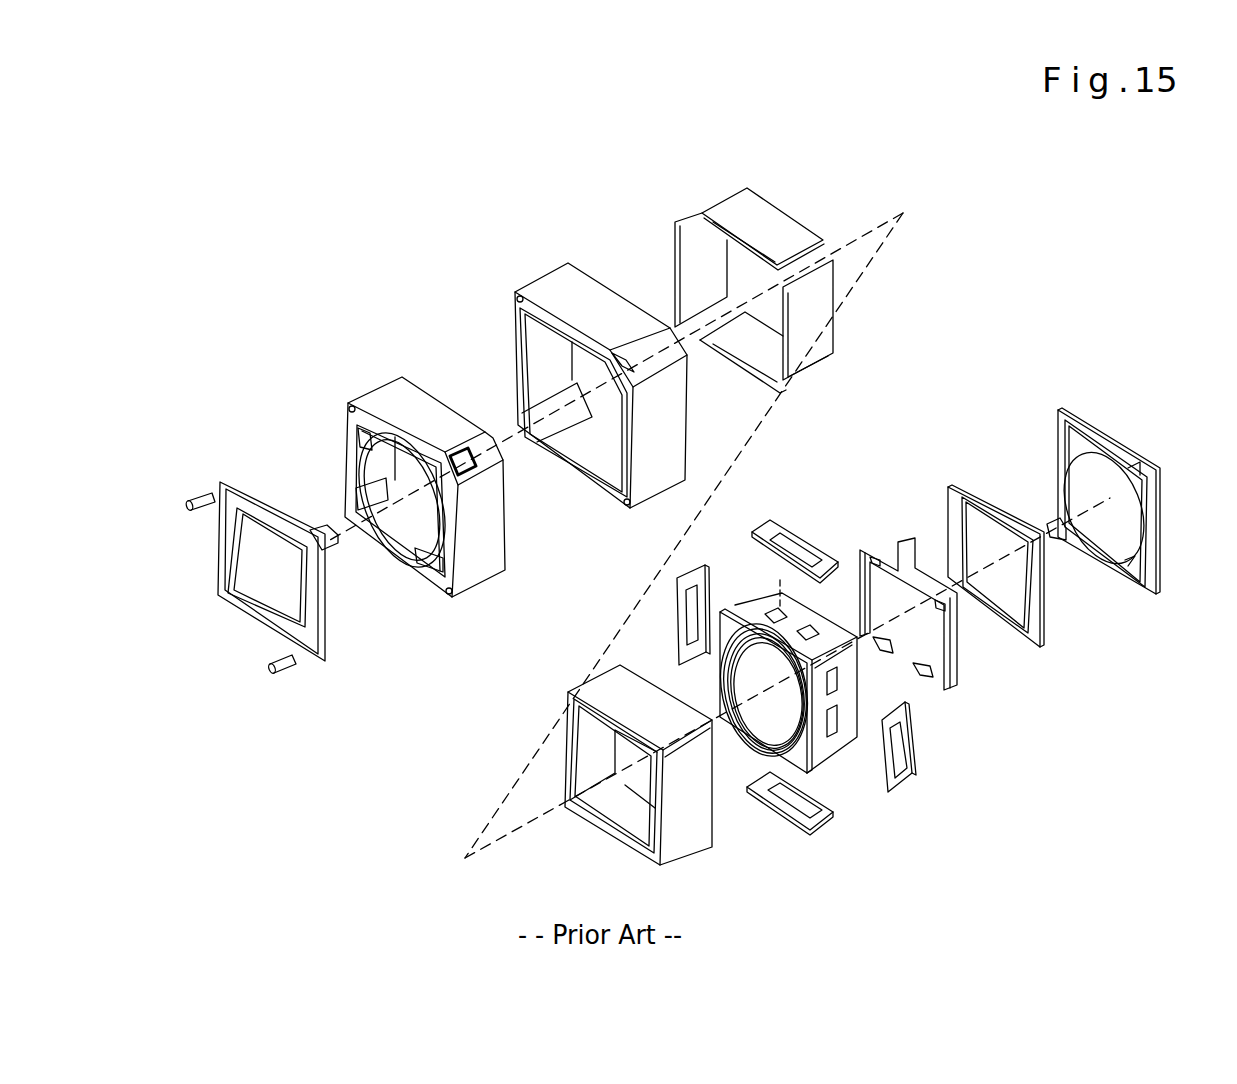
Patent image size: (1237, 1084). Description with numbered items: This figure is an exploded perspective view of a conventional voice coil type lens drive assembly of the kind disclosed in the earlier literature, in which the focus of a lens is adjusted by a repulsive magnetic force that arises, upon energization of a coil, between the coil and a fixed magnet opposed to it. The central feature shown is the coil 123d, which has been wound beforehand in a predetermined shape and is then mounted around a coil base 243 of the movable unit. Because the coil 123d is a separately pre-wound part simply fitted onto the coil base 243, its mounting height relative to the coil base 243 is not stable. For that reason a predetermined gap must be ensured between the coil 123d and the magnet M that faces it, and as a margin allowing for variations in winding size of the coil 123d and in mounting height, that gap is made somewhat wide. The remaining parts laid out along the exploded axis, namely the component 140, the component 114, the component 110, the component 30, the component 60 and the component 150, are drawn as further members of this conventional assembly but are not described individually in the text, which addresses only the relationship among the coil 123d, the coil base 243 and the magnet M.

The front frame plate 140 is at (268, 482).
The lens holder 114 is at (392, 380).
The housing 110 is at (556, 293).
The magnet M is at (768, 232).
The coil base 243 is at (850, 675).
The coil 123d is at (912, 772).
The leaf spring 30 is at (893, 545).
The seal frame 60 is at (948, 520).
The rear frame 150 is at (1057, 433).